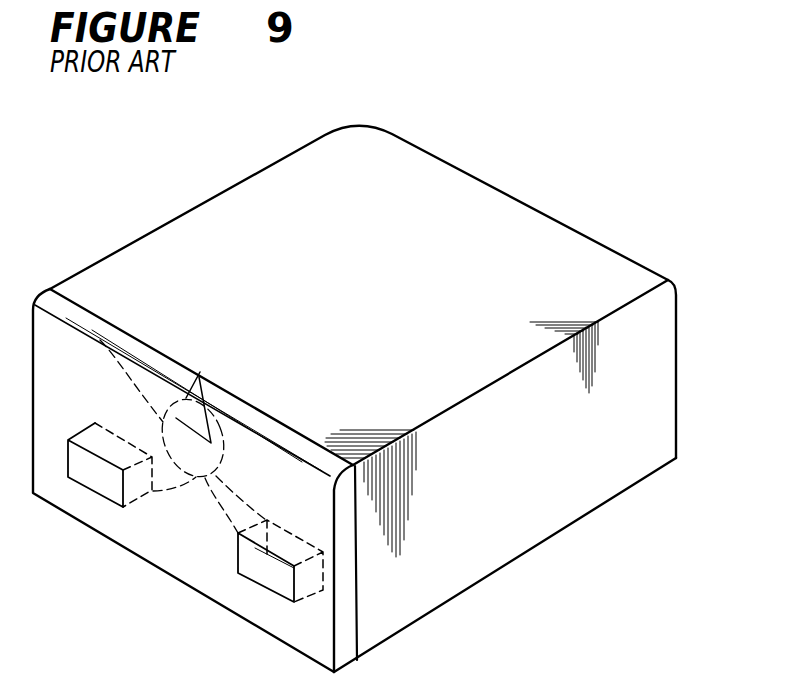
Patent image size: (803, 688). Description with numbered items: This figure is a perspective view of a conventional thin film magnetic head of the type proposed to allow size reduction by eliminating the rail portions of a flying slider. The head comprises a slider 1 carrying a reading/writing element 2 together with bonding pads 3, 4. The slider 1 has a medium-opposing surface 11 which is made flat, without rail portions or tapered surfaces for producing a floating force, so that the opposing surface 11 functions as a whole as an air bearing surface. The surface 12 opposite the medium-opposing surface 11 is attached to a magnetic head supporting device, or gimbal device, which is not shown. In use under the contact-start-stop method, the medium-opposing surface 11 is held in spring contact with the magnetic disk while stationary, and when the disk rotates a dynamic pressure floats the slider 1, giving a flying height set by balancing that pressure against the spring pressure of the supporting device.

The slider 1 is at (379, 399).
The medium-opposing surface 11 is at (504, 265).
The surface opposite the medium-opposing surface 12 is at (580, 518).
The reading/writing element 2 is at (100, 340).
The bonding pad 3 is at (100, 474).
The bonding pad 4 is at (260, 572).